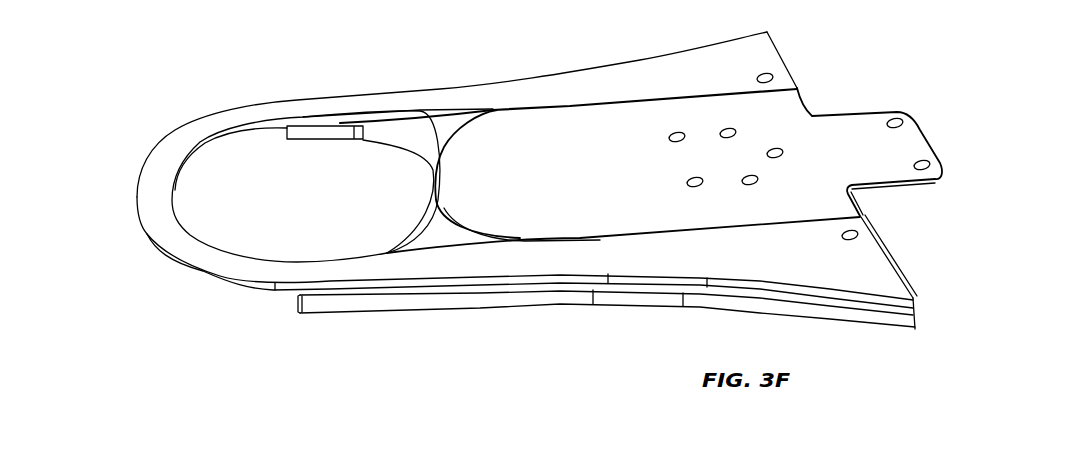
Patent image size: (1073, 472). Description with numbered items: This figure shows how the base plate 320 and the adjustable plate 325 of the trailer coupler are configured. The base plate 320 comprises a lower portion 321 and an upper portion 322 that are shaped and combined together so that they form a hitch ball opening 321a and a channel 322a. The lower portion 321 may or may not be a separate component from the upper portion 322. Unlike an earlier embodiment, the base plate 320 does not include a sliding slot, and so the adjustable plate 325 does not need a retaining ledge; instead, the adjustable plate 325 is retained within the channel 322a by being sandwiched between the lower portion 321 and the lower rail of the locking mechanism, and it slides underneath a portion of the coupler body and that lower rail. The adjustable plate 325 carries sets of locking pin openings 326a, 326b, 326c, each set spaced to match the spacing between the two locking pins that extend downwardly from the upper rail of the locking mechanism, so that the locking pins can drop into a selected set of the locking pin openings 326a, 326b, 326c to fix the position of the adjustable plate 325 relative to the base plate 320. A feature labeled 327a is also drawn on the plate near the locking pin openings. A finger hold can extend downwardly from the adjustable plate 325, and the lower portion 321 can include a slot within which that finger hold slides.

The base plate 320 is at (166, 326).
The lower portion 321 is at (366, 312).
The hitch ball opening 321a is at (420, 169).
The upper portion 322 is at (470, 277).
The channel 322a is at (417, 128).
The adjustable plate 325 is at (870, 170).
The locking pin openings 326a is at (927, 158).
The locking pin openings 326b is at (740, 176).
The locking pin openings 326c is at (684, 185).
The hole of flap 327a is at (778, 150).